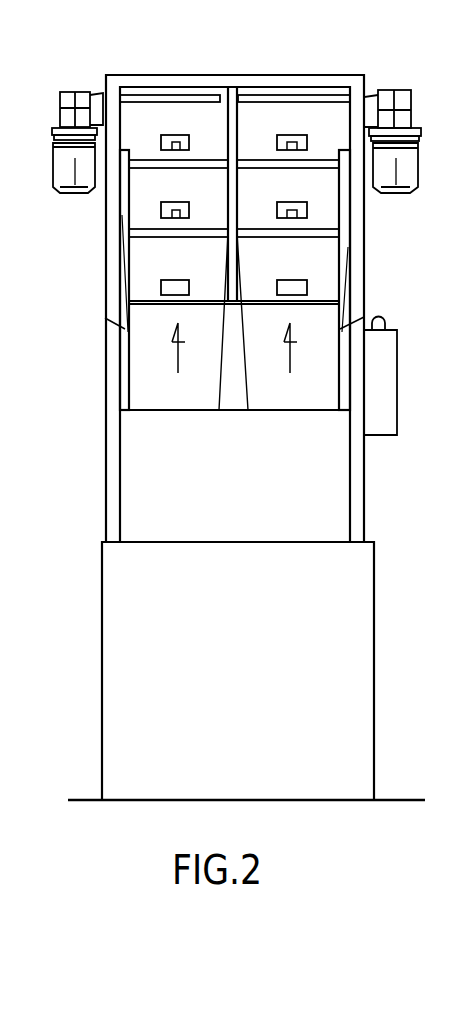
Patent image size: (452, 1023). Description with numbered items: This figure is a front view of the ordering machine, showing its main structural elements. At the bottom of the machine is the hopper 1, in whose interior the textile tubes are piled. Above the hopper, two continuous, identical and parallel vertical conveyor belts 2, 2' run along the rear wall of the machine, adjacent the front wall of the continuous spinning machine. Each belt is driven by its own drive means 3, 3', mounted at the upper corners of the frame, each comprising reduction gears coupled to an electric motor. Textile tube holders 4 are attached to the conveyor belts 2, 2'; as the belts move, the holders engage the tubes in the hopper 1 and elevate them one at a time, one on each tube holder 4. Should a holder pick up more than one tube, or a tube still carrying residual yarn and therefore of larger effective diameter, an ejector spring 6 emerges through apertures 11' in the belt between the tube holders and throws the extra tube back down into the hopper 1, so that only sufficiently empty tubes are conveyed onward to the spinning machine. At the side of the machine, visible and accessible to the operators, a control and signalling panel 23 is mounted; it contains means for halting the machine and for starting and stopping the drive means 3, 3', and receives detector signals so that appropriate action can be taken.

The hopper 1 is at (133, 435).
The vertical conveyor belt 2 is at (292, 194).
The vertical conveyor belt 2' is at (164, 194).
The drive means 3 is at (392, 104).
The drive means 3' is at (66, 123).
The textile tube holder 4 is at (143, 235).
The ejector spring 6 is at (181, 135).
The apertures 11' is at (118, 305).
The control and signalling panel 23 is at (382, 418).